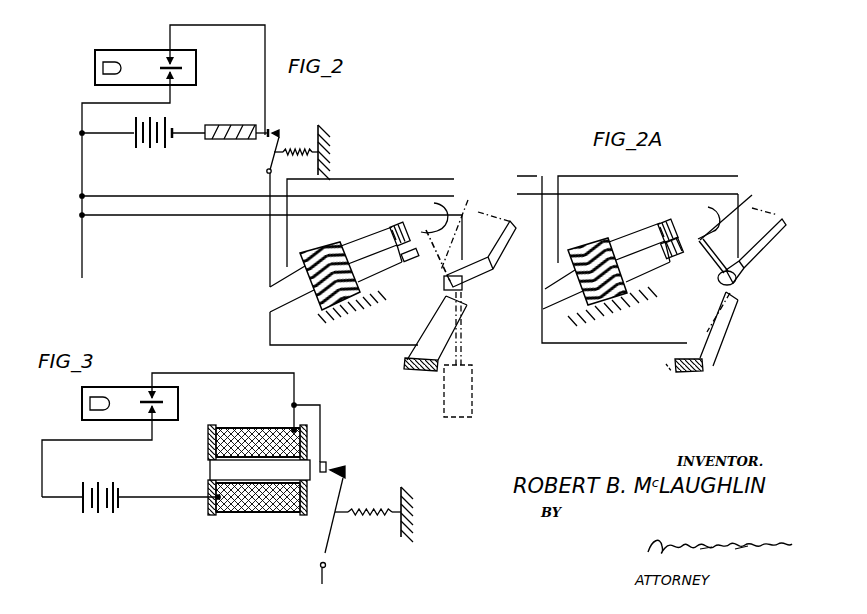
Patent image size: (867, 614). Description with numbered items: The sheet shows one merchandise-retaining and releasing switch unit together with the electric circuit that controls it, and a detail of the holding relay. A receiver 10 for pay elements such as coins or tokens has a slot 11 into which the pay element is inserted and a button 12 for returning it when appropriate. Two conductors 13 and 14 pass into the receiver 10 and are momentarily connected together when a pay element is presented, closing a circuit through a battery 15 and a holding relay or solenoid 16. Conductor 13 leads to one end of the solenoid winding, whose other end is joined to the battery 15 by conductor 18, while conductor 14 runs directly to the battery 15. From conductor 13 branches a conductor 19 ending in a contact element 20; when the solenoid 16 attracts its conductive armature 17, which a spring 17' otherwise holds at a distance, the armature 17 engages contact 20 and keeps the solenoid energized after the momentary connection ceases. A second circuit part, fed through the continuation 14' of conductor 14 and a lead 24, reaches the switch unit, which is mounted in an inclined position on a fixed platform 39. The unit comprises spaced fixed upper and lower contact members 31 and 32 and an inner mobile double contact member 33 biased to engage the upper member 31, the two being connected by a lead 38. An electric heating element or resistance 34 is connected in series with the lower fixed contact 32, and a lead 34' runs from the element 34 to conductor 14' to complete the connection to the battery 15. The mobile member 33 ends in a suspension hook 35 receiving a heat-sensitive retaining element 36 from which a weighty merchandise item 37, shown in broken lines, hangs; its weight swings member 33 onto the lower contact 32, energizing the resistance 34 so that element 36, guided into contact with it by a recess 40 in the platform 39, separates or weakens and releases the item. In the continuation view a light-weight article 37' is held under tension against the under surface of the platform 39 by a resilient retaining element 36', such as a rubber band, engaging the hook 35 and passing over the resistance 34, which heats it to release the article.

In FIG. 2, the receiver 10 is at (91, 73).
In FIG. 3, the receiver 10 is at (79, 406).
In FIG. 2, the slot 11 is at (183, 68).
In FIG. 3, the slot 11 is at (165, 402).
In FIG. 2, the button 12 is at (110, 61).
In FIG. 3, the button 12 is at (100, 397).
In FIG. 2, the conductor 13 is at (170, 30).
In FIG. 3, the conductor 13 is at (166, 373).
In FIG. 2, the conductor 14 is at (144, 108).
In FIG. 3, the conductor 14 is at (110, 457).
In FIG. 2, the continuation of conductor 14' is at (61, 204).
In FIG. 3, the continuation of conductor 14' is at (59, 463).
In FIG. 2, the battery 15 is at (157, 150).
In FIG. 3, the battery 15 is at (107, 517).
In FIG. 2, the holding relay or solenoid 16 is at (229, 121).
In FIG. 3, the holding relay or solenoid 16 is at (313, 427).
In FIG. 2, the conductive armature 17 is at (290, 196).
In FIG. 3, the conductive armature 17 is at (354, 521).
In FIG. 2, the spring 17' is at (315, 142).
In FIG. 3, the spring 17' is at (374, 516).
In FIG. 2, the conductor 18 is at (178, 133).
In FIG. 3, the conductor 18 is at (131, 497).
In FIG. 2, the branch conductor 19 is at (270, 125).
In FIG. 3, the branch conductor 19 is at (311, 404).
In FIG. 2, the contact element 20 is at (273, 128).
In FIG. 3, the contact element 20 is at (328, 461).
In FIG. 2, the lead 24 is at (269, 244).
In FIG. 2, the upper fixed contact member 31 is at (342, 242).
In FIG. 2A, the upper fixed contact member 31 is at (637, 236).
In FIG. 2, the lower fixed contact member 32 is at (371, 274).
In FIG. 2A, the lower fixed contact member 32 is at (645, 264).
In FIG. 2, the mobile double contact member 33 is at (275, 292).
In FIG. 2A, the mobile double contact member 33 is at (545, 291).
In FIG. 2, the electric heating element 34 is at (476, 291).
In FIG. 2A, the electric heating element 34 is at (704, 288).
In FIG. 2, the lead 34' is at (271, 220).
In FIG. 2A, the lead 34' is at (627, 175).
In FIG. 2, the suspension hook 35 is at (432, 215).
In FIG. 2A, the suspension hook 35 is at (705, 220).
In FIG. 2, the retaining element 36 is at (458, 233).
In FIG. 2A, the resilient item-retaining element 36' is at (735, 227).
In FIG. 2, the merchandise item 37 is at (477, 354).
In FIG. 2A, the light-weight article of merchandise 37' is at (756, 248).
In FIG. 2, the lead 38 is at (383, 179).
In FIG. 2A, the lead 38 is at (655, 176).
In FIG. 2, the platform 39 is at (403, 369).
In FIG. 2A, the platform 39 is at (682, 363).
In FIG. 2, the recess 40 is at (488, 267).